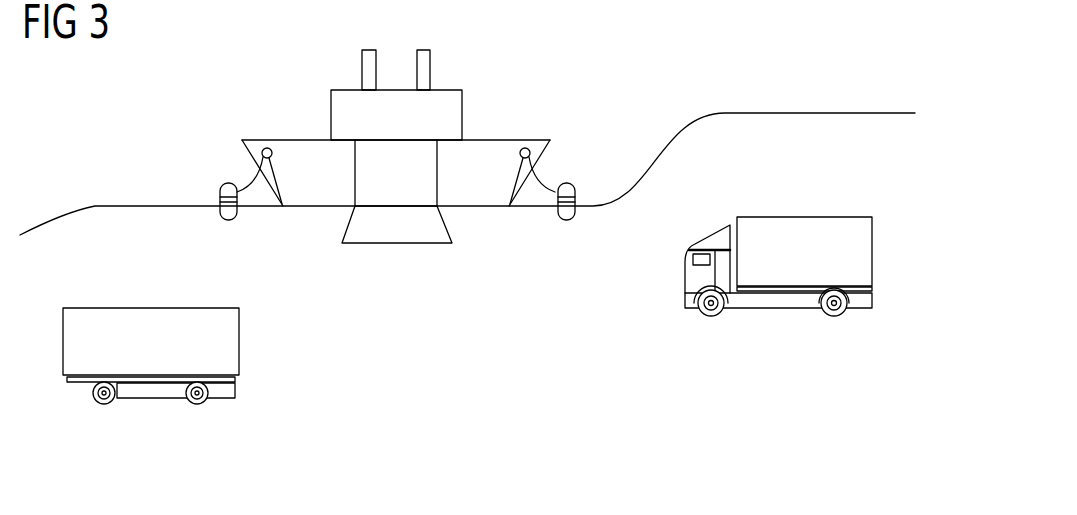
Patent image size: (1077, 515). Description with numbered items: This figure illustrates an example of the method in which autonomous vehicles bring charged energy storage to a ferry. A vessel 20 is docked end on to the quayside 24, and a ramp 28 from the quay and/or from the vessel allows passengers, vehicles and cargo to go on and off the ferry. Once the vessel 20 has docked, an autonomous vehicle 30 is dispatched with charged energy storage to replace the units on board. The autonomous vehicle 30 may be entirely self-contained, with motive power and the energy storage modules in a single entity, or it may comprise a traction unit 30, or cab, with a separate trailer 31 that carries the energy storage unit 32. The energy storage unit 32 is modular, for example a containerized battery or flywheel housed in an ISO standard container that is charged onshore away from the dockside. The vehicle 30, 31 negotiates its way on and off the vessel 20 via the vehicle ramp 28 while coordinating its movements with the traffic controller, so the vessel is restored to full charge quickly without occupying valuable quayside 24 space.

The vessel 20 is at (409, 178).
The quayside 24 is at (90, 207).
The ramp 28 is at (393, 237).
The autonomous vehicle 30 is at (467, 300).
The trailer 31 is at (782, 334).
The energy storage unit 32 is at (155, 308).